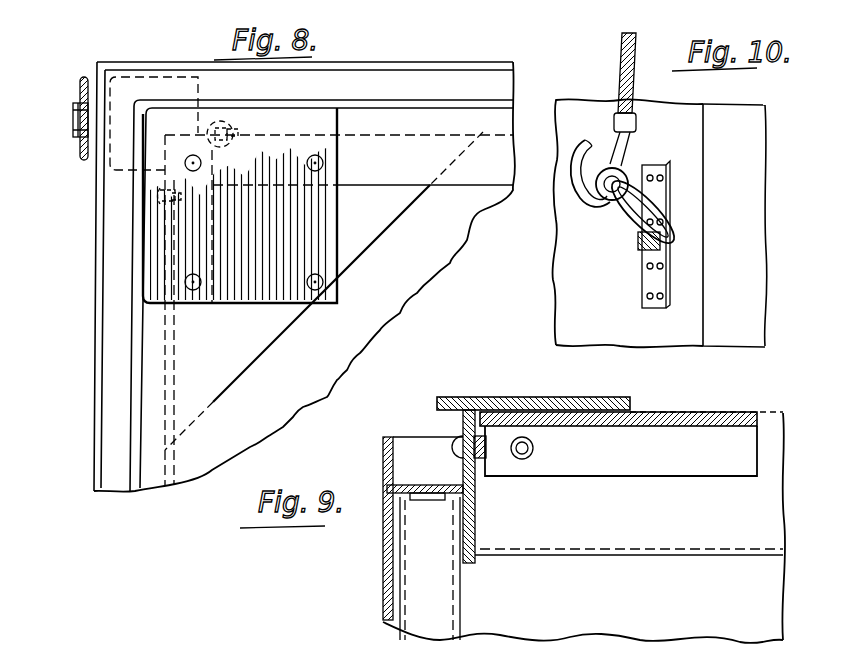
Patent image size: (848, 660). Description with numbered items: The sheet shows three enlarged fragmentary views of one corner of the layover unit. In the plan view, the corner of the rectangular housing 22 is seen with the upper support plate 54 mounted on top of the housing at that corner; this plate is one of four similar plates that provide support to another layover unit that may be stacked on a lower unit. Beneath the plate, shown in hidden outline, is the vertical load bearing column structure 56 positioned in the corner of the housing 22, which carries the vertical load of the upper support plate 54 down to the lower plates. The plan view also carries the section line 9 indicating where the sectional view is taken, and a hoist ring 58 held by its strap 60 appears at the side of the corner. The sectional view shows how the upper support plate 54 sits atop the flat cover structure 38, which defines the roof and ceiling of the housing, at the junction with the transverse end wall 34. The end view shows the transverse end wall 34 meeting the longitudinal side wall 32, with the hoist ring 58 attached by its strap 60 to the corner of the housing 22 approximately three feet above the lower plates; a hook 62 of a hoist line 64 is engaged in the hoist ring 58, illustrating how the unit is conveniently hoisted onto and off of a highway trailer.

In FIG. 8, the housing 22 is at (399, 64).
In FIG. 8, the upper support plate 54 is at (289, 306).
In FIG. 9, the upper support plate 54 is at (514, 398).
In FIG. 8, the vertical load bearing column structure 56 is at (200, 82).
In FIG. 8, the hoist ring 58 is at (79, 83).
In FIG. 10, the hoist ring 58 is at (624, 166).
In FIG. 8, the strap 60 is at (73, 120).
In FIG. 10, the strap 60 is at (664, 284).
In FIG. 8, the section line 9— 9 is at (115, 273).
In FIG. 10, the hoist line 64 is at (621, 52).
In FIG. 10, the hook 62 is at (580, 186).
In FIG. 10, the transverse end wall 34 is at (577, 330).
In FIG. 9, the transverse end wall 34 is at (385, 626).
In FIG. 10, the longitudinal side wall 32 is at (755, 318).
In FIG. 9, the cover structure 38 is at (700, 418).